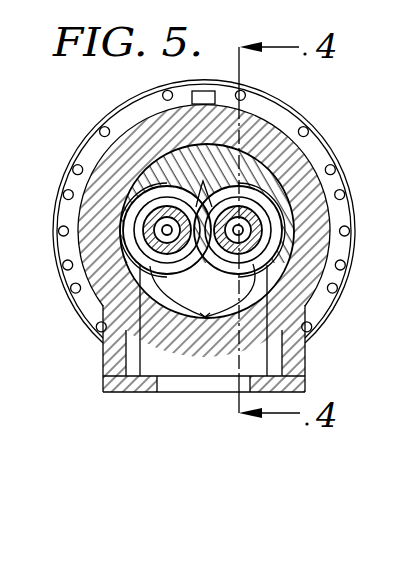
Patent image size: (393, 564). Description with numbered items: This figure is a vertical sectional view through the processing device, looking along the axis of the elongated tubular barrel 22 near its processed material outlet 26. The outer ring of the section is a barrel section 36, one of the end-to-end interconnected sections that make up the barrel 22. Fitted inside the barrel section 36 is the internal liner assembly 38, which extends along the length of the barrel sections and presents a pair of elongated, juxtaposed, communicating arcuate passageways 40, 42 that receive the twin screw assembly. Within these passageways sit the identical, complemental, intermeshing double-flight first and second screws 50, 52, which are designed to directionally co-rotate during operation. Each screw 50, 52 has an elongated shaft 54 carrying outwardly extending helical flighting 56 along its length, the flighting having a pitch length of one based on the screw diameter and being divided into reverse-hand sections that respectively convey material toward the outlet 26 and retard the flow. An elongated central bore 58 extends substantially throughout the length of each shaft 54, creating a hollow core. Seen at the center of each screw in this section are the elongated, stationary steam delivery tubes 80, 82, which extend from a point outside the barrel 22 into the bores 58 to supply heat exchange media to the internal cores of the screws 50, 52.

The barrel 22 is at (121, 117).
The processed material outlet 26 is at (180, 385).
The barrel section 36 is at (281, 132).
The internal liner assembly 38 is at (163, 163).
The arcuate passageway 40 is at (254, 299).
The arcuate passageway 42 is at (152, 303).
The first screw 50 is at (271, 197).
The second screw 52 is at (132, 198).
The shaft 54 is at (147, 224).
The helical flighting 56 is at (206, 319).
The central bore 58 is at (204, 188).
The steam delivery tube 80 is at (226, 256).
The steam delivery tube 82 is at (161, 232).